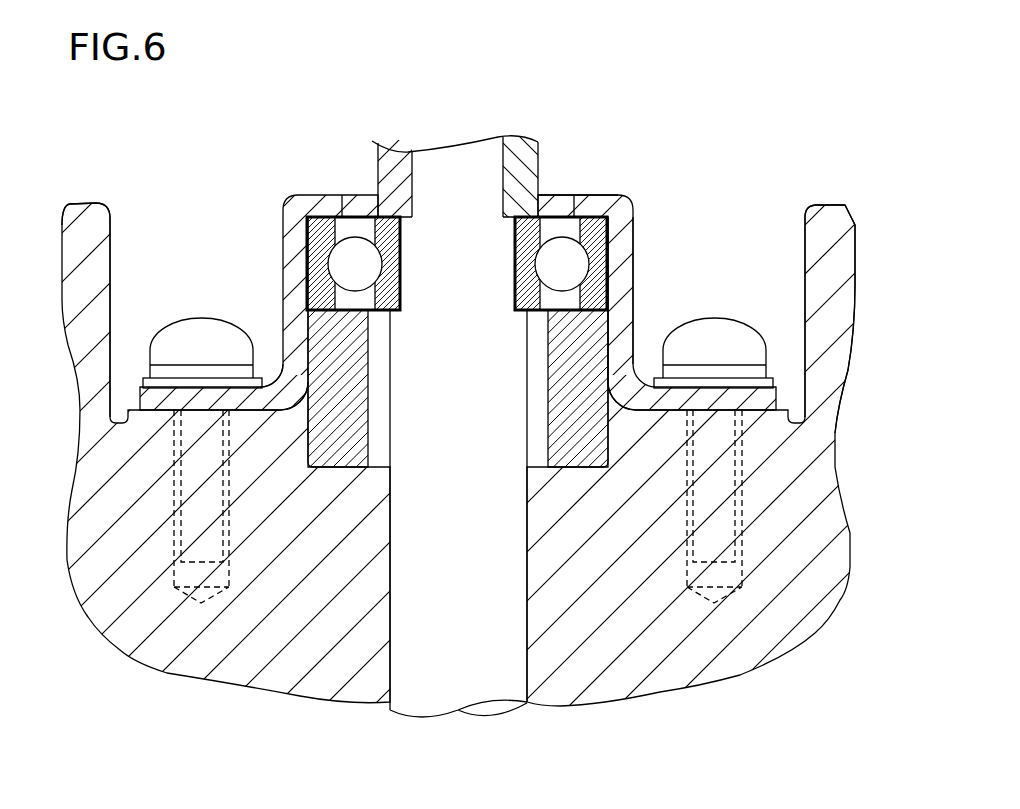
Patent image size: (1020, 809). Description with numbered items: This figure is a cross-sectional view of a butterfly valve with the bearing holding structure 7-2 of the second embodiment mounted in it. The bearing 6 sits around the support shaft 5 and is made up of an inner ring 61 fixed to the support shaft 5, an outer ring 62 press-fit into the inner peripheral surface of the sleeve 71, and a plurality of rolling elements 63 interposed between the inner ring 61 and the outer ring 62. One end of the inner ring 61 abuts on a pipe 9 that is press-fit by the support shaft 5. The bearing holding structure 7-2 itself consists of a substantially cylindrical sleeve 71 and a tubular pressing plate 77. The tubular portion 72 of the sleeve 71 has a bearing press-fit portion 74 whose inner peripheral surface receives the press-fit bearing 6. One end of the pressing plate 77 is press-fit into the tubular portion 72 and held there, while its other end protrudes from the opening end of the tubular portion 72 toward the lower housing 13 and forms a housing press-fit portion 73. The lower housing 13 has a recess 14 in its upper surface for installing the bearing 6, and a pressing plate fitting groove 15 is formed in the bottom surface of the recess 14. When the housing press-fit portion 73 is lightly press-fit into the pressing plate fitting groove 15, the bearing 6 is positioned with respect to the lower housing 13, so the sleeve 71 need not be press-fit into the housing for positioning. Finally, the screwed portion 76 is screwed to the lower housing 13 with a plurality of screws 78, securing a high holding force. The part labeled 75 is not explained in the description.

The support shaft 5 is at (450, 157).
The bearing 6 is at (463, 404).
The inner ring 61 is at (390, 227).
The outer ring 62 is at (318, 217).
The rolling elements 63 is at (350, 245).
The pipe 9 is at (528, 147).
The bearing holding structure 7-2 is at (510, 404).
The sleeve 71 is at (510, 404).
The tubular portion 72 is at (353, 404).
The housing press-fit portion 73 is at (593, 448).
The bearing press-fit portion 74 is at (630, 278).
The flange portion 75 is at (590, 197).
The screwed portion 76 is at (270, 386).
The pressing plate 77 is at (510, 404).
The screws 78 is at (200, 318).
The lower housing 13 is at (458, 294).
The recess 14 is at (805, 255).
The pressing plate fitting groove 15 is at (510, 404).